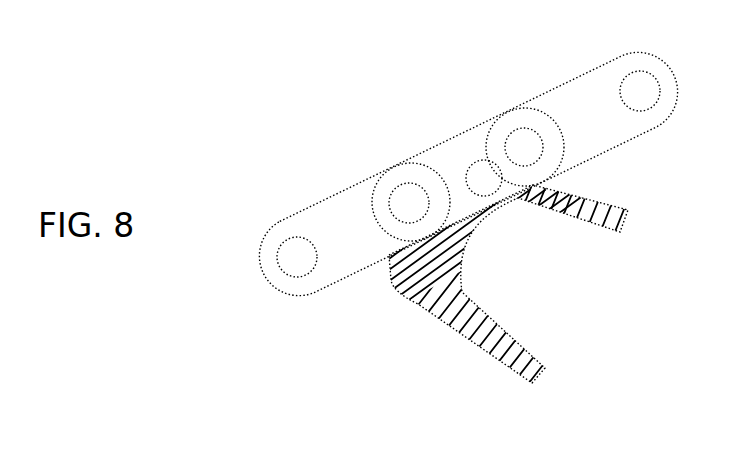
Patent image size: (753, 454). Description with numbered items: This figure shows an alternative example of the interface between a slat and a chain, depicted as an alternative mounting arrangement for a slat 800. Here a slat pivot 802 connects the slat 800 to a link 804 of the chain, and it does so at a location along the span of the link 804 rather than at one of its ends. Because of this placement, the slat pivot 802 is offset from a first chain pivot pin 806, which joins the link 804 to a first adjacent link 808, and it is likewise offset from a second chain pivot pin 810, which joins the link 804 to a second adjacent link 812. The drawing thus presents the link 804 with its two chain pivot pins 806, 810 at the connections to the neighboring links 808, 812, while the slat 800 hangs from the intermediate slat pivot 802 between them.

The slat 800 is at (568, 216).
The slat pivot 802 is at (483, 160).
The link 804 is at (423, 160).
The first chain pivot pin 806 is at (525, 147).
The first adjacent link 808 is at (587, 103).
The second chain pivot pin 810 is at (408, 208).
The second adjacent link 812 is at (333, 195).